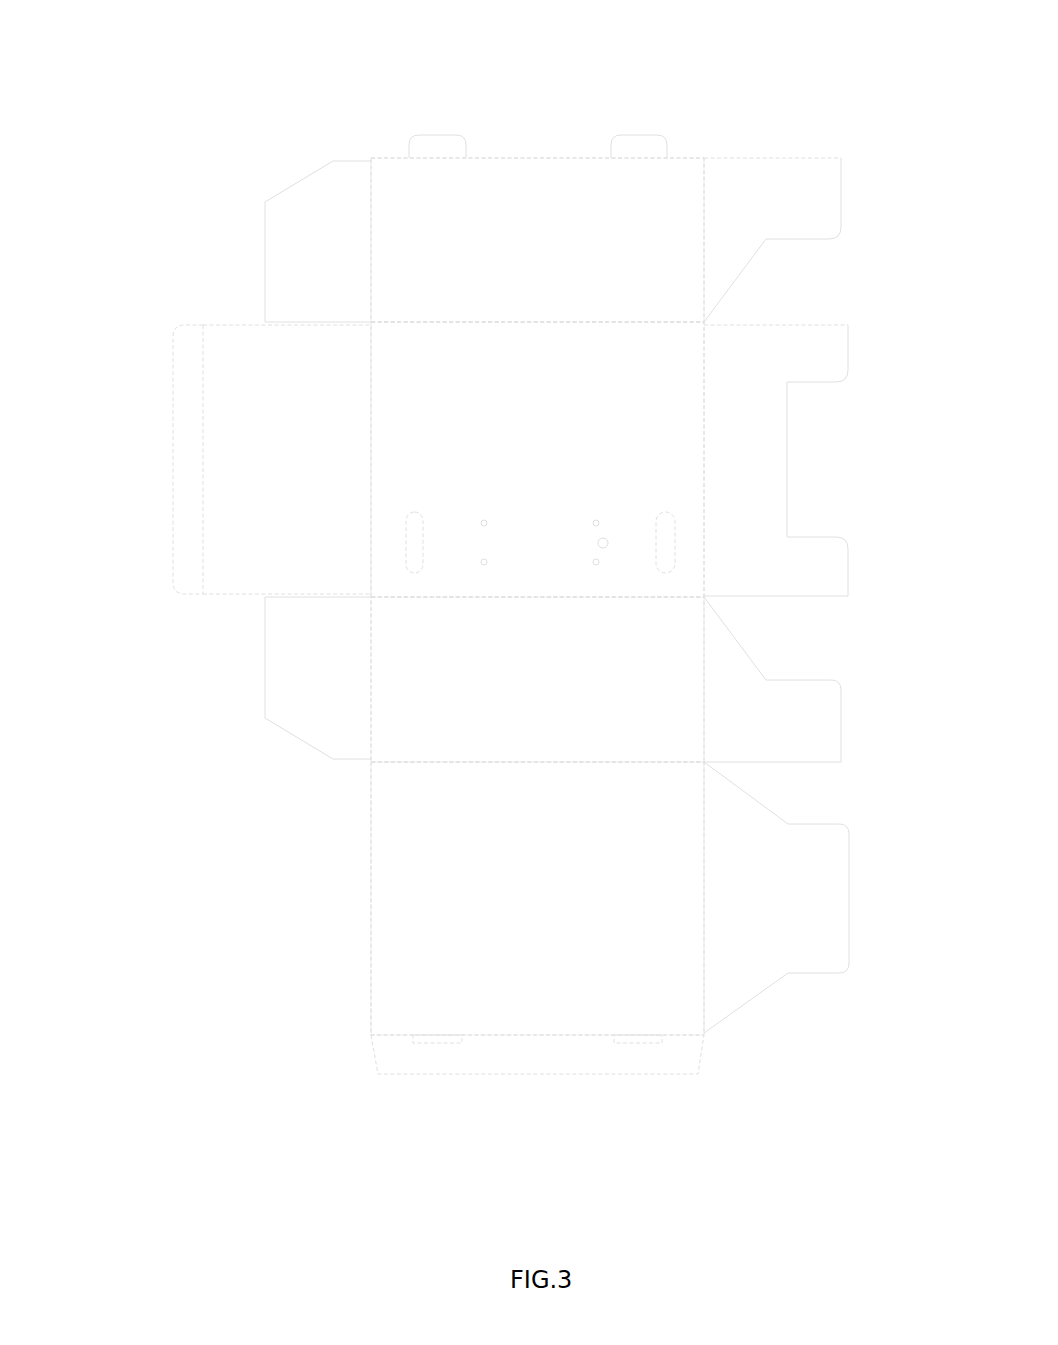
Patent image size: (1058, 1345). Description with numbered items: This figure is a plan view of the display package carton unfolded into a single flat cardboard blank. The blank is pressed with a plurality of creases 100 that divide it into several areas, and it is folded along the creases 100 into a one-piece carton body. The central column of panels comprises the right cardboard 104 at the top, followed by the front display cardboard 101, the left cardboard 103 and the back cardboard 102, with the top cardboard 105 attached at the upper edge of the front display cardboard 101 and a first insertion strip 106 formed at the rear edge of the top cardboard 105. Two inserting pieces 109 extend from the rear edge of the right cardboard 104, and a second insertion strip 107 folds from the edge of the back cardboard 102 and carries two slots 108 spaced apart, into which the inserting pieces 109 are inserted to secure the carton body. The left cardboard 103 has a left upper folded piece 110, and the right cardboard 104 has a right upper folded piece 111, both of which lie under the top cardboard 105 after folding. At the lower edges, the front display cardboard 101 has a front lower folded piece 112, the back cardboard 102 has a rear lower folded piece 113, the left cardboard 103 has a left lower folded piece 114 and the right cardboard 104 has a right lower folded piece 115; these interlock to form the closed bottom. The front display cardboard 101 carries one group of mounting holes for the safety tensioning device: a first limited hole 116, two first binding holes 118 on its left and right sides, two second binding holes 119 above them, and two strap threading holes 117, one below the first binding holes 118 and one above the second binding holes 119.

The creases 100 is at (654, 322).
The front display cardboard 101 is at (654, 450).
The back cardboard 102 is at (420, 963).
The left cardboard 103 is at (420, 706).
The right cardboard 104 is at (533, 158).
The top cardboard 105 is at (265, 496).
The first insertion strip 106 is at (185, 417).
The second insertion strip 107 is at (533, 1045).
The slots 108 is at (438, 1043).
The inserting pieces 109 is at (433, 146).
The left upper folded piece 110 is at (313, 664).
The right upper folded piece 111 is at (310, 237).
The front lower folded piece 112 is at (768, 499).
The rear lower folded piece 113 is at (760, 960).
The left lower folded piece 114 is at (799, 727).
The right lower folded piece 115 is at (792, 205).
The first limited hole 116 is at (605, 548).
The strap threading holes 117 is at (413, 512).
The first binding holes 118 is at (596, 523).
The second binding holes 119 is at (484, 523).